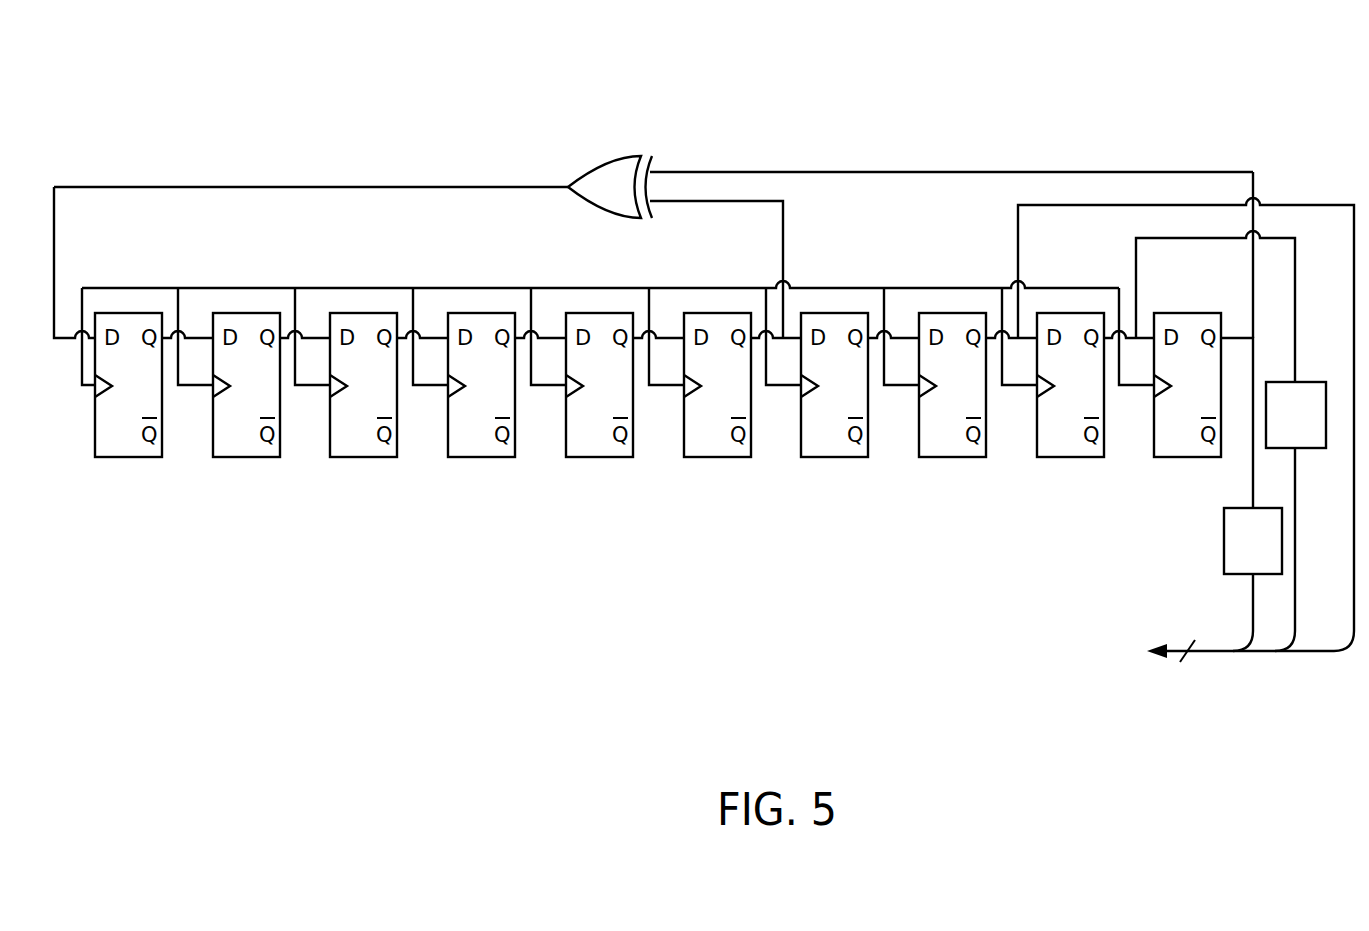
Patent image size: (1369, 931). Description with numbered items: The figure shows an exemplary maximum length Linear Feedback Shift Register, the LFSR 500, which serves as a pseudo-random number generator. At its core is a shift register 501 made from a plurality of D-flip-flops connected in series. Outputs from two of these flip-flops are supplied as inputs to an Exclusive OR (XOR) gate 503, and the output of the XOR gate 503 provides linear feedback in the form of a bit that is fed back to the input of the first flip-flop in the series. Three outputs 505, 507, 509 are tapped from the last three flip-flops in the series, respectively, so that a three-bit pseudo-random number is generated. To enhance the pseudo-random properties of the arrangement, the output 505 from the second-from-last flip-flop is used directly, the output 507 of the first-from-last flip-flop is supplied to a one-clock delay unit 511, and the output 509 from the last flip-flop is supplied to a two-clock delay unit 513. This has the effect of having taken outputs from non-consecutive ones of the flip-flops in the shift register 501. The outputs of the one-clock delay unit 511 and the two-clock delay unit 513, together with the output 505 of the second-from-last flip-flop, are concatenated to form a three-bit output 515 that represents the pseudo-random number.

The Linear Feedback Shift Register 500 is at (234, 88).
The shift register 501 is at (1221, 462).
The Exclusive OR (XOR) gate 503 is at (630, 156).
The output 505 is at (1277, 204).
The output 507 is at (1278, 238).
The output 509 is at (1253, 490).
The 1-clock delay unit 511 is at (1298, 382).
The 2-clock delay unit 513 is at (1224, 523).
The 3-bit output 515 is at (1095, 645).